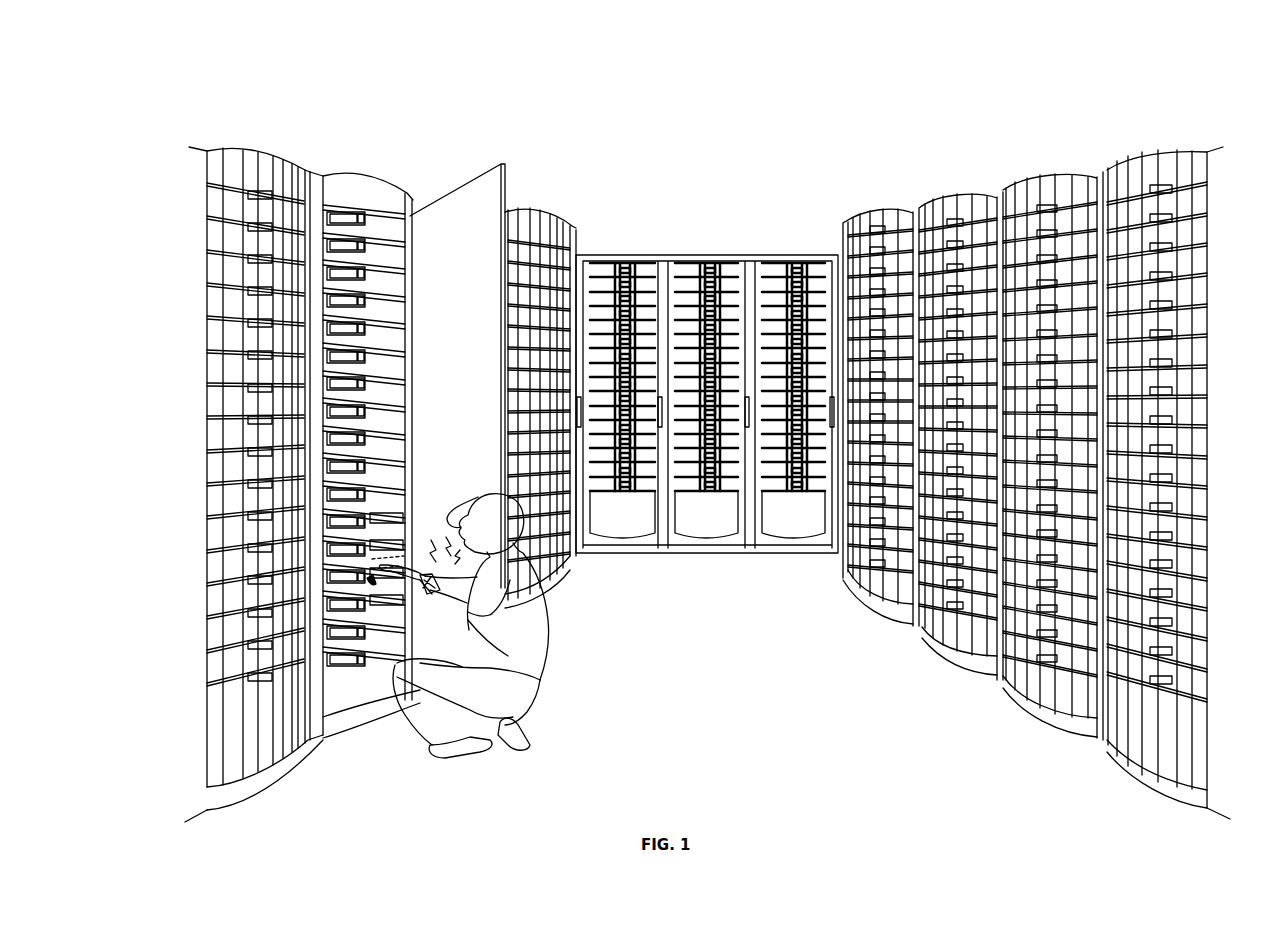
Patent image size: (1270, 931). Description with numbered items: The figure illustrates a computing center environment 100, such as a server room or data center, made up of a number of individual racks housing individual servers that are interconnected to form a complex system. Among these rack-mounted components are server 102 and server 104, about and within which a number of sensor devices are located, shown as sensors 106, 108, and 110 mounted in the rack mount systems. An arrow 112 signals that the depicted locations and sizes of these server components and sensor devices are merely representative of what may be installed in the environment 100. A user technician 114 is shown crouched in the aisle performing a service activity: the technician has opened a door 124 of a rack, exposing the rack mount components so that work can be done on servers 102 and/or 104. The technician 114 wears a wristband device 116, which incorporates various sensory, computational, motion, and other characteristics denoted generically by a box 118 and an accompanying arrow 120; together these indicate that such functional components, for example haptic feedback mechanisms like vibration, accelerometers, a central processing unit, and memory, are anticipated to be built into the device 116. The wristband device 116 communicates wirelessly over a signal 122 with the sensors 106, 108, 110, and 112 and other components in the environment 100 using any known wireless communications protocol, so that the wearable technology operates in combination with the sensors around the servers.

The computing center environment 100 is at (172, 101).
The server 102 is at (330, 496).
The server 104 is at (360, 578).
The sensor 106 is at (333, 500).
The sensor 108 is at (345, 600).
The sensor 110 is at (372, 568).
The arrow 112 is at (330, 634).
The user technician 114 is at (545, 640).
The wristband device 116 is at (425, 578).
The box 118 is at (436, 596).
The arrow 120 is at (537, 679).
The signal 122 is at (477, 495).
The door 124 is at (487, 205).